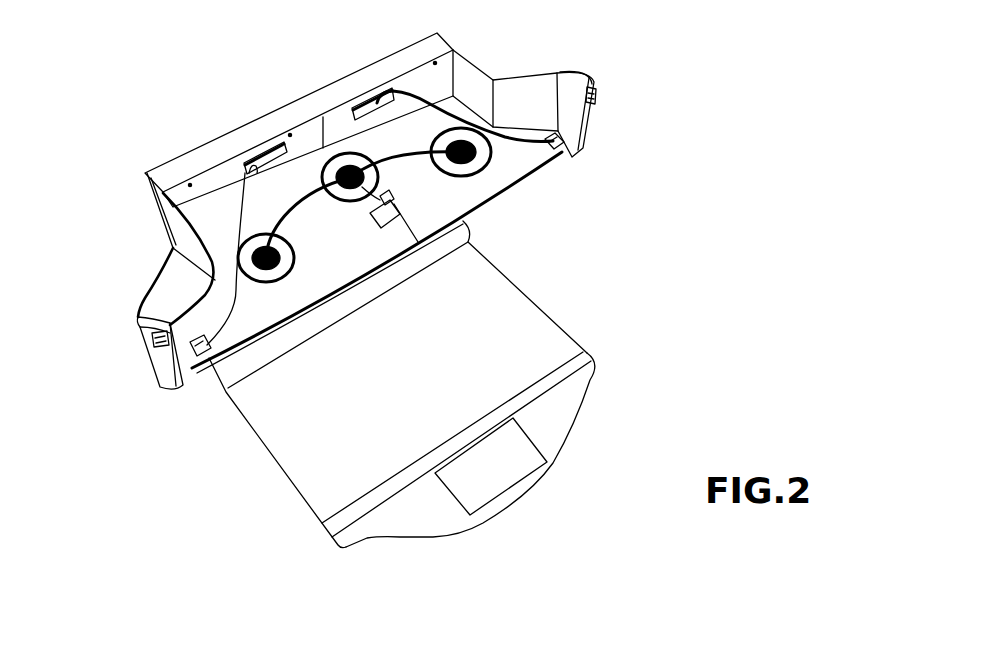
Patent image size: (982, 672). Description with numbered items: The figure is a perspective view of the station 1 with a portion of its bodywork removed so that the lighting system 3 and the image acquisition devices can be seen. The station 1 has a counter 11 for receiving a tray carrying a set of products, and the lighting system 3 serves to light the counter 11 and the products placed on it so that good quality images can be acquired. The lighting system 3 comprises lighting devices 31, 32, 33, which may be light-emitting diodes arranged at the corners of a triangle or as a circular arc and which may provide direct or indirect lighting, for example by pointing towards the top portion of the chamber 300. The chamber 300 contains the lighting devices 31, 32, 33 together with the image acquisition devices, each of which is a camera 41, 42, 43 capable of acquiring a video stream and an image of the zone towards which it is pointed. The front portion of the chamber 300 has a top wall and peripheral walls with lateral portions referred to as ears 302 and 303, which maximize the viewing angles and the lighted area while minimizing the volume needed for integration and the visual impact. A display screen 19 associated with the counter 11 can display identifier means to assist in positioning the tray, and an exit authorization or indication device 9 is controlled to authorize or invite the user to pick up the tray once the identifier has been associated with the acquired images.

The station 1 is at (672, 202).
The lighting system 3 is at (555, 62).
The exit authorization or indication device 9 is at (153, 338).
The counter 11 is at (545, 310).
The display screen 19 is at (473, 488).
The lighting device 31 is at (348, 186).
The lighting device 32 is at (266, 262).
The lighting device 33 is at (460, 130).
The camera 41 is at (394, 222).
The camera 42 is at (203, 357).
The camera 43 is at (557, 152).
The chamber 300 is at (171, 215).
The ear 302 is at (160, 365).
The ear 303 is at (597, 78).